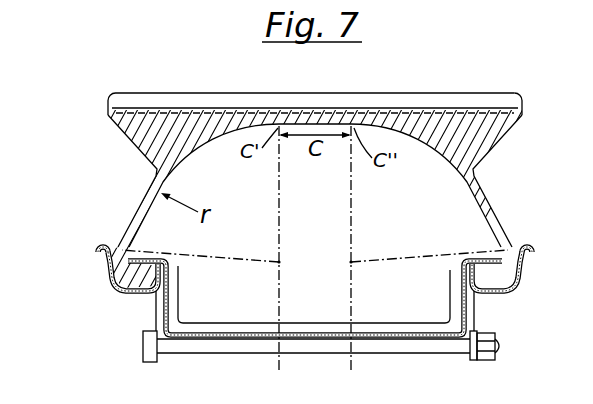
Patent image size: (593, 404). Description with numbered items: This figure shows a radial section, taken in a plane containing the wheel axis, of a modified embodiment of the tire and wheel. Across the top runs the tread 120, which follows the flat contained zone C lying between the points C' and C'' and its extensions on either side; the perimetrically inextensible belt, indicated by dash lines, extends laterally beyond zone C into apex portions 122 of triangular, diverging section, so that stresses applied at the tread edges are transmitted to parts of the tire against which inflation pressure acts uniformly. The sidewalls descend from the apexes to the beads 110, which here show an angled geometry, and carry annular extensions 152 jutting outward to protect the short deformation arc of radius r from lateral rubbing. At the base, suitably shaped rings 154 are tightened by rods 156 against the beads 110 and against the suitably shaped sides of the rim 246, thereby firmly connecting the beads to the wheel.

The tread 120 is at (198, 96).
The apex portions 122 is at (506, 106).
The annular extensions 152 is at (133, 215).
The rings 154 is at (96, 250).
The beads 110 is at (136, 293).
The rim 246 is at (248, 331).
The rods 156 is at (204, 353).